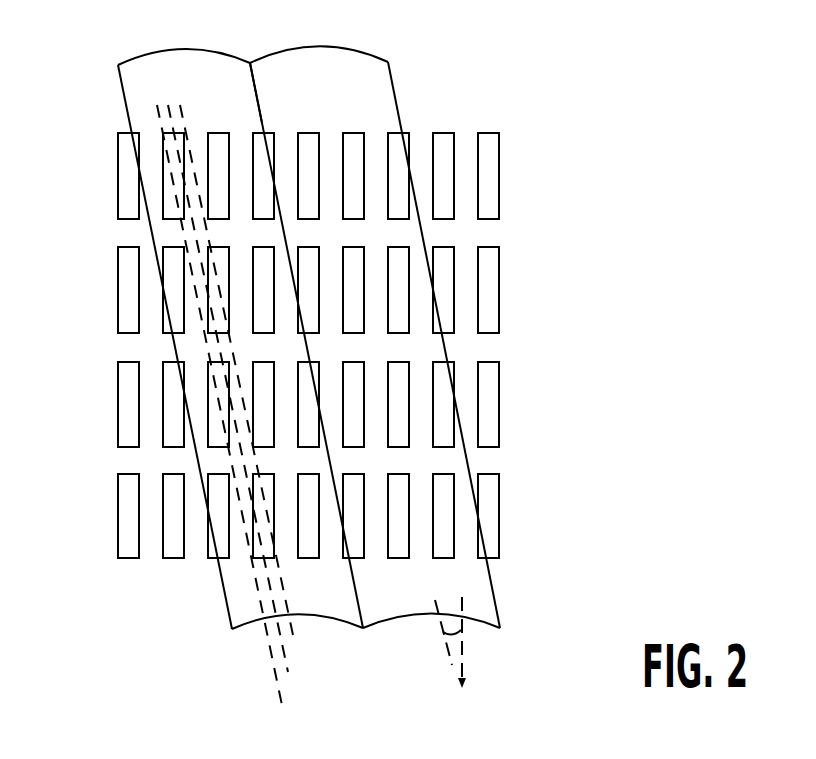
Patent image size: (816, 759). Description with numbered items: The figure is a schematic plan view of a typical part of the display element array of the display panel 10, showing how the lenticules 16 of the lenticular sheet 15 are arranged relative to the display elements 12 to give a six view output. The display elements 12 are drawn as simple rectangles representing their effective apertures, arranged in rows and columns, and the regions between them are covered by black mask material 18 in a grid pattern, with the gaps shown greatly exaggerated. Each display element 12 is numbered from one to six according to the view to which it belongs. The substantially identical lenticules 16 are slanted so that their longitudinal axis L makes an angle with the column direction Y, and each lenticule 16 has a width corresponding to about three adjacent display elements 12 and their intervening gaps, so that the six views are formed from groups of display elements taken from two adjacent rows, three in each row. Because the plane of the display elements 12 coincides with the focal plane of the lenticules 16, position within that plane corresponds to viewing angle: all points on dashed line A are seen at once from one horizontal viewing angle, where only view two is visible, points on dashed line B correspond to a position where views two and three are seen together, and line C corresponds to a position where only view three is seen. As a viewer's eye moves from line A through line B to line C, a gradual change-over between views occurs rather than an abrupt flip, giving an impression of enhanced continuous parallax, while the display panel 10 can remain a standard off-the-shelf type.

The display panel 10 is at (458, 120).
The display elements 12 is at (119, 378).
The lenticular sheet 15 is at (394, 59).
The lenticules 16 is at (297, 49).
The black mask material 18 is at (465, 235).
The dashed line A is at (230, 418).
The dashed line B is at (238, 398).
The line C is at (249, 379).
The longitudinal axis of the lenticules L is at (448, 658).
The column direction Y is at (463, 649).